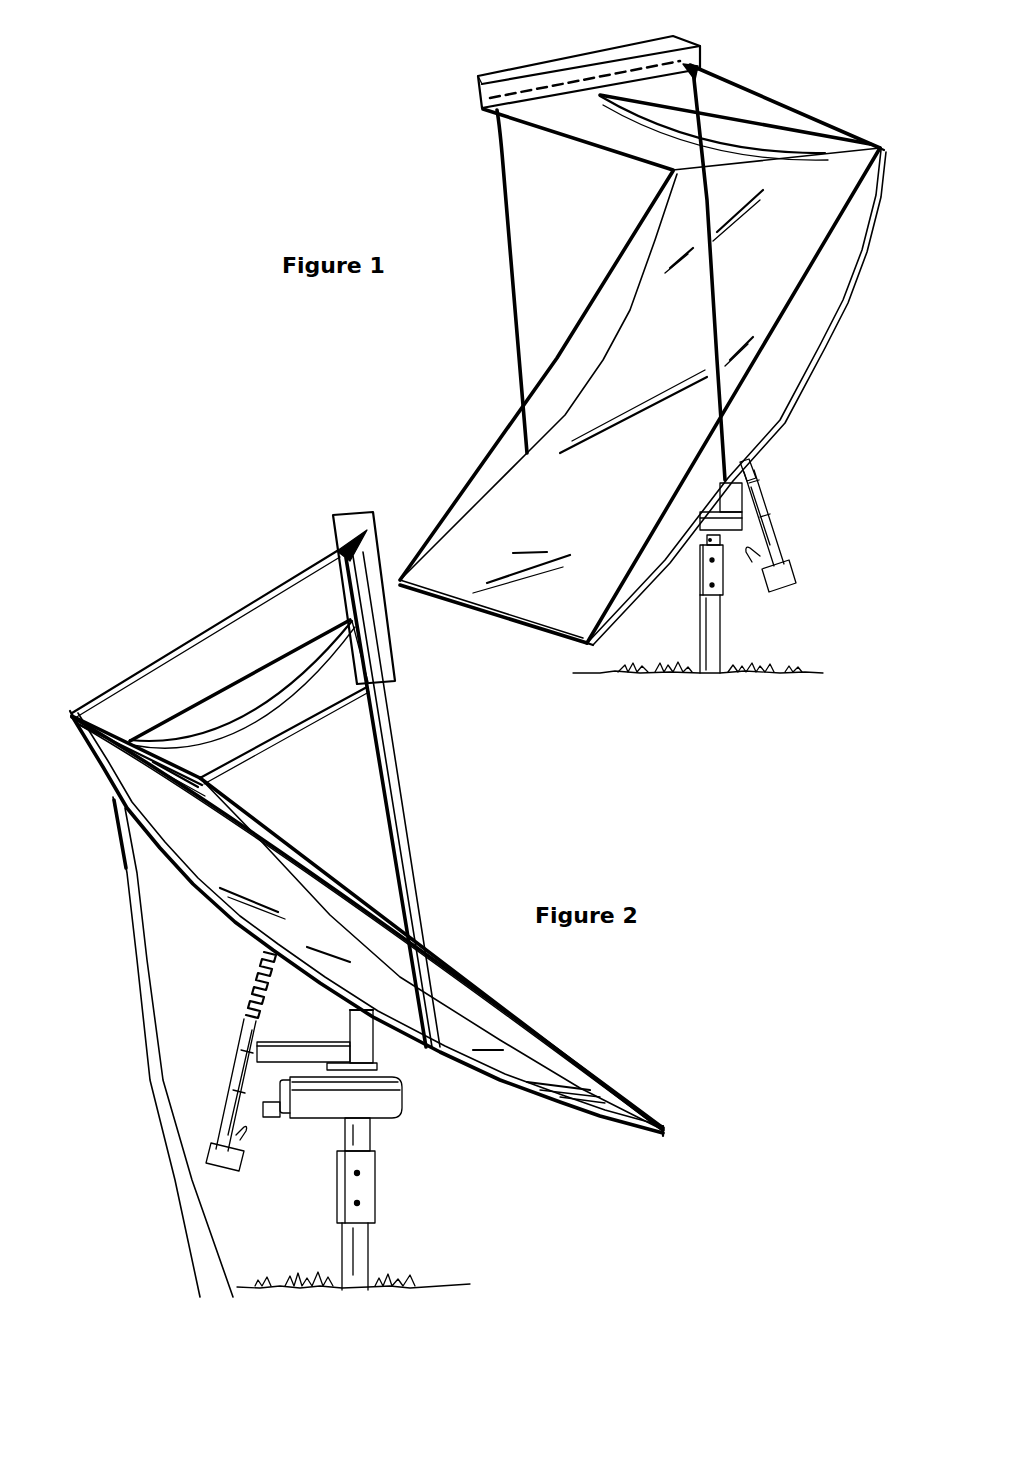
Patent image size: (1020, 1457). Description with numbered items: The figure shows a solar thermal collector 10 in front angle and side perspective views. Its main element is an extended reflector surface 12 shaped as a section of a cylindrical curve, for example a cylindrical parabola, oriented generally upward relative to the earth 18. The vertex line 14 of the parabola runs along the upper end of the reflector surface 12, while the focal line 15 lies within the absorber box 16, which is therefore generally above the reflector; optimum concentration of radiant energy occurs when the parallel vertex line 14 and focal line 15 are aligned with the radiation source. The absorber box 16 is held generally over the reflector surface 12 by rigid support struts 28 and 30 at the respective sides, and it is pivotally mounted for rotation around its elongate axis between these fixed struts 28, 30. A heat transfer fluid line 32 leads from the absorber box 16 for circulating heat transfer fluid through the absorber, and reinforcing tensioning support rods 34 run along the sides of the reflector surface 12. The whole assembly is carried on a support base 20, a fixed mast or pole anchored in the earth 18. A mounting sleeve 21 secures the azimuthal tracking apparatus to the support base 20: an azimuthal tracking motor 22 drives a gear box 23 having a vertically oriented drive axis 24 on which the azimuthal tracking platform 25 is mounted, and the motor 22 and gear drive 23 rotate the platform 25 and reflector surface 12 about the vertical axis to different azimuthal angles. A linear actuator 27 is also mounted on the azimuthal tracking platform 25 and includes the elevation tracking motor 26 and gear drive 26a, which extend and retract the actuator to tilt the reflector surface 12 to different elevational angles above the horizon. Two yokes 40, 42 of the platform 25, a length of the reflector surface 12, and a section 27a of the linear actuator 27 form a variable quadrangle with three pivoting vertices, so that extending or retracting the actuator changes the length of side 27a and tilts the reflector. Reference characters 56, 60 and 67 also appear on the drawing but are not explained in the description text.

In FIG. 1, the solar thermal collector 10 is at (497, 158).
In FIG. 2, the solar thermal collector 10 is at (172, 622).
In FIG. 1, the reflector surface 12 is at (838, 313).
In FIG. 2, the reflector surface 12 is at (364, 924).
In FIG. 1, the vertex line 14 is at (835, 146).
In FIG. 2, the vertex line 14 is at (53, 711).
In FIG. 1, the focal line 15 is at (598, 72).
In FIG. 1, the absorber box 16 is at (518, 70).
In FIG. 2, the absorber box 16 is at (352, 508).
In FIG. 1, the earth 18 is at (628, 717).
In FIG. 2, the earth 18 is at (415, 1283).
In FIG. 1, the support base 20 is at (723, 642).
In FIG. 2, the support base 20 is at (372, 1238).
In FIG. 1, the mounting sleeve 21 is at (697, 593).
In FIG. 2, the mounting sleeve 21 is at (378, 1177).
In FIG. 2, the azimuthal tracking motor 22 is at (287, 1125).
In FIG. 1, the gear box 23 is at (695, 552).
In FIG. 2, the gear box 23 is at (385, 1122).
In FIG. 2, the drive axis 24 is at (375, 1072).
In FIG. 2, the azimuthal tracking platform 25 is at (362, 1045).
In FIG. 1, the elevation tracking motor 26 is at (783, 550).
In FIG. 2, the elevation tracking motor 26 is at (242, 1137).
In FIG. 1, the gear drive 26a is at (777, 586).
In FIG. 2, the gear drive 26a is at (215, 1162).
In FIG. 1, the linear actuator 27 is at (770, 500).
In FIG. 2, the linear actuator 27 is at (237, 1062).
In FIG. 1, the section of the linear actuator 27a is at (757, 460).
In FIG. 2, the section of the linear actuator 27a is at (257, 973).
In FIG. 1, the support strut 28 is at (800, 112).
In FIG. 2, the support strut 28 is at (303, 730).
In FIG. 1, the support strut 30 is at (503, 242).
In FIG. 2, the support strut 30 is at (265, 593).
In FIG. 1, the heat transfer fluid line 32 is at (721, 119).
In FIG. 2, the heat transfer fluid line 32 is at (118, 1022).
In FIG. 1, the tensioning support rods 34 is at (605, 280).
In FIG. 2, the tensioning support rods 34 is at (487, 977).
In FIG. 2, the yoke 40 is at (310, 1043).
In FIG. 2, the yoke 42 is at (348, 1022).
In FIG. 1, the attachment line 56 is at (578, 139).
In FIG. 2, the attachment line 56 is at (372, 620).
In FIG. 1, the curved band 60 is at (713, 124).
In FIG. 2, the curved band 60 is at (240, 680).
In FIG. 1, the corner cleat 67 is at (702, 58).
In FIG. 2, the corner cleat 67 is at (330, 540).